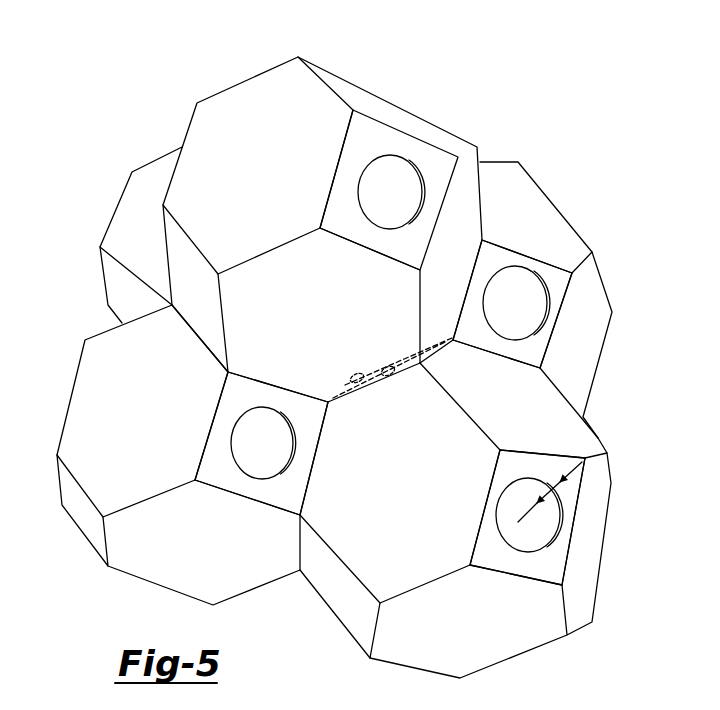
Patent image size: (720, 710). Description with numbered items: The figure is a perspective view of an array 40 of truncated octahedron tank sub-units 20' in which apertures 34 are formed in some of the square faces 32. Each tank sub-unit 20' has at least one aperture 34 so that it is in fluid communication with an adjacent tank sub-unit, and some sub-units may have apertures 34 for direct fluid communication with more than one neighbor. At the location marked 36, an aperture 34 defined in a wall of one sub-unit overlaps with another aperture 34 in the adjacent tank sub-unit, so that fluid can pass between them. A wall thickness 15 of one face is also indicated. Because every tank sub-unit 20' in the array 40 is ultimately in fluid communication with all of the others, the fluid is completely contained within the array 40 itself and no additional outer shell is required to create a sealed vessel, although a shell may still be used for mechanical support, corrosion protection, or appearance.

The array 40 is at (122, 68).
The truncated octahedron tank sub-unit 20' is at (345, 360).
The square face 32 is at (370, 138).
The aperture 34 is at (393, 192).
The overlapping aperture location 36 is at (377, 363).
The wall thickness 15 is at (565, 462).